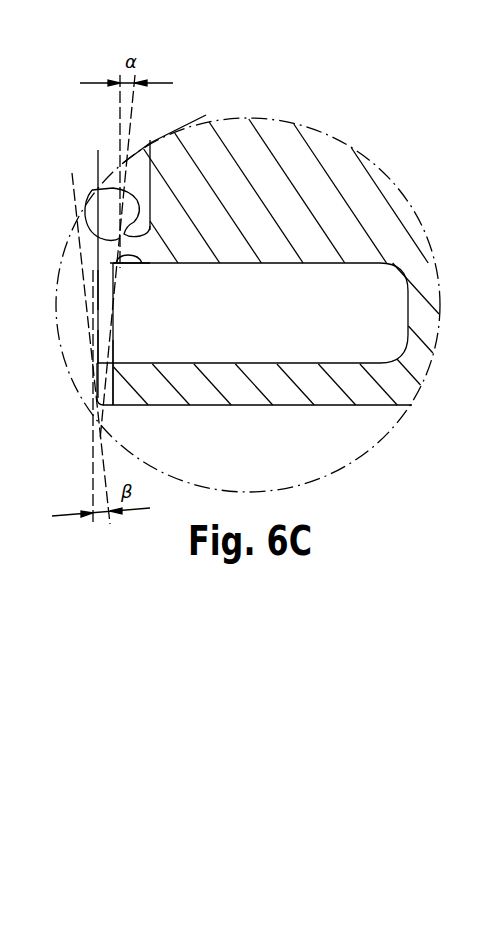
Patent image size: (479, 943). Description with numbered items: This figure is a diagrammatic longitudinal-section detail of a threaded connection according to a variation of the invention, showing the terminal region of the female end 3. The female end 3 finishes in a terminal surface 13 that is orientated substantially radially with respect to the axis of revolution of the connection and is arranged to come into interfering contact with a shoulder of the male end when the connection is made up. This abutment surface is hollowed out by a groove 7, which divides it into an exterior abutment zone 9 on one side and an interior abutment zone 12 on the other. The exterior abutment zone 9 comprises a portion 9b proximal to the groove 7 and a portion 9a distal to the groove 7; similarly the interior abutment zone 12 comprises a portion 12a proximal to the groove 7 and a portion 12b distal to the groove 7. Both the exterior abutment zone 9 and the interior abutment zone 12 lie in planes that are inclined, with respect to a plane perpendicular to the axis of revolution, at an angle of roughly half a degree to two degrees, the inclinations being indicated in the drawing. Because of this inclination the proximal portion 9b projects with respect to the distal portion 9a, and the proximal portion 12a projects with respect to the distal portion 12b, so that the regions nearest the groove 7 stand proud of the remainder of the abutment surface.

The female end 3 is at (238, 178).
The groove 7 is at (322, 306).
The exterior abutment zone 9 is at (92, 203).
The distal portion of exterior abutment zone 9a is at (151, 141).
The proximal portion of exterior abutment zone 9b is at (134, 258).
The interior abutment zone 12 is at (96, 390).
The proximal portion of interior abutment zone 12a is at (96, 366).
The distal portion of interior abutment zone 12b is at (105, 404).
The terminal surface 13 is at (113, 287).